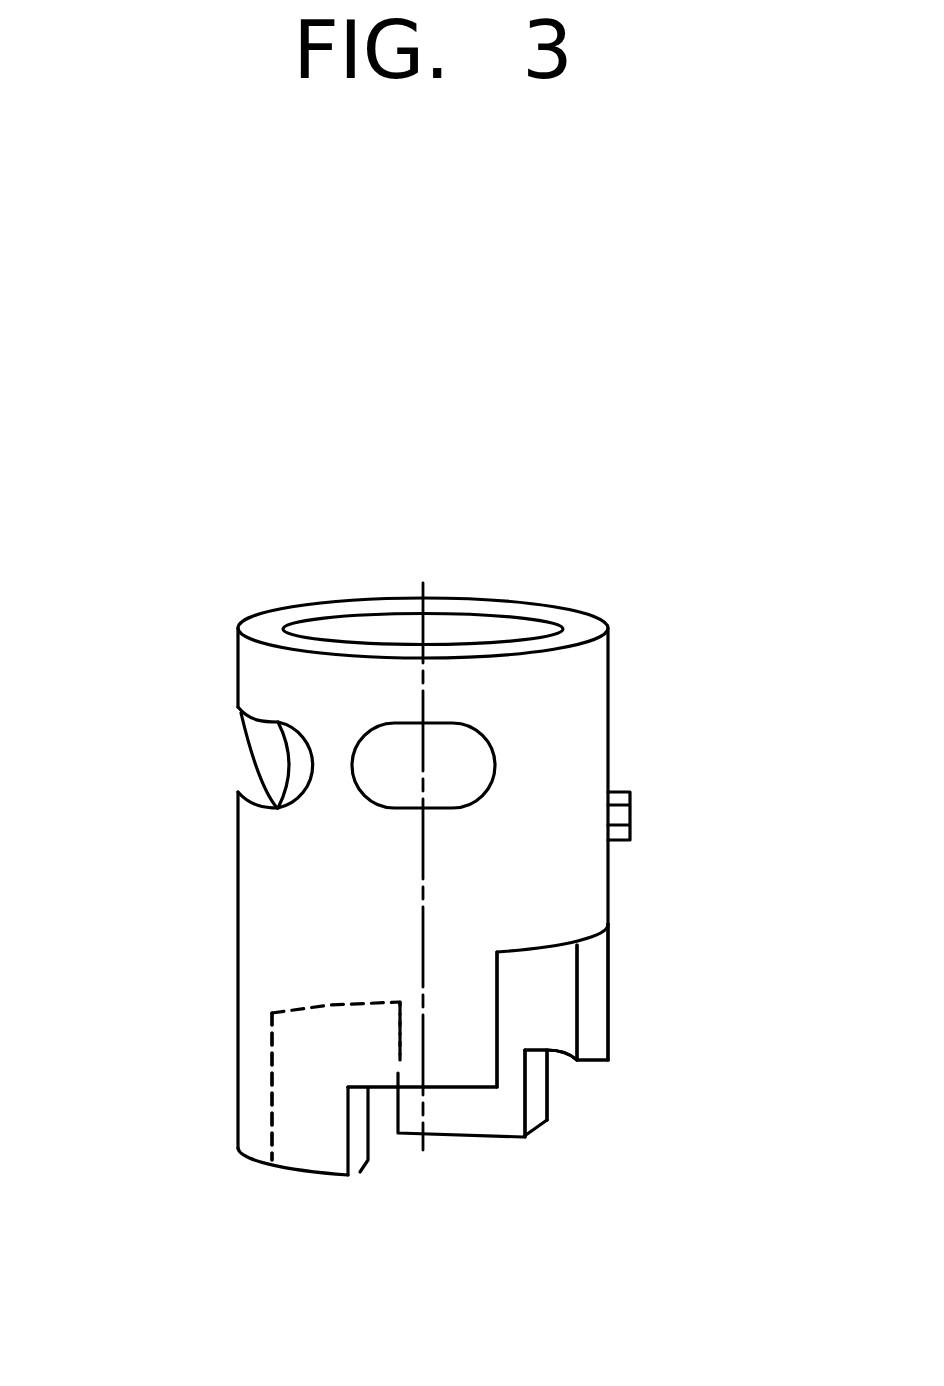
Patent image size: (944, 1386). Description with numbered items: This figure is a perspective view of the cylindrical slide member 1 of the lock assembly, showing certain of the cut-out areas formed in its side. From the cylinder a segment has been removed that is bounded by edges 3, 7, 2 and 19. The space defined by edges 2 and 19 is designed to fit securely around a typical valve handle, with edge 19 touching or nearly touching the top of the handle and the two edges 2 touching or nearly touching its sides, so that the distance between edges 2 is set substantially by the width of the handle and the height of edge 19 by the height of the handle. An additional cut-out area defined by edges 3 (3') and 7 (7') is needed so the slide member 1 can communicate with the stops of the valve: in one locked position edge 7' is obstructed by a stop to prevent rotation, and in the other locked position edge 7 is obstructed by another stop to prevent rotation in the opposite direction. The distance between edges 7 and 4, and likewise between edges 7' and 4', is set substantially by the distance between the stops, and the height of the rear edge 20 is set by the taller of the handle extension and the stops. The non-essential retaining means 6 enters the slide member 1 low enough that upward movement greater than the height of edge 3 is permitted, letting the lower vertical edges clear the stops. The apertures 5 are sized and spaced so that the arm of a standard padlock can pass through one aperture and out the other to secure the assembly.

The slide member 1 is at (237, 853).
The edges 2 is at (495, 993).
The edge 3 is at (422, 1214).
The edge 3' is at (621, 1195).
The edge 4 is at (177, 1086).
The edge 4' is at (241, 1031).
The apertures 5 is at (253, 753).
The retaining means 6 is at (630, 810).
The edge 7 is at (361, 1214).
The edge 7' is at (561, 1195).
The edge 19 is at (552, 942).
The edge 20 is at (340, 1002).